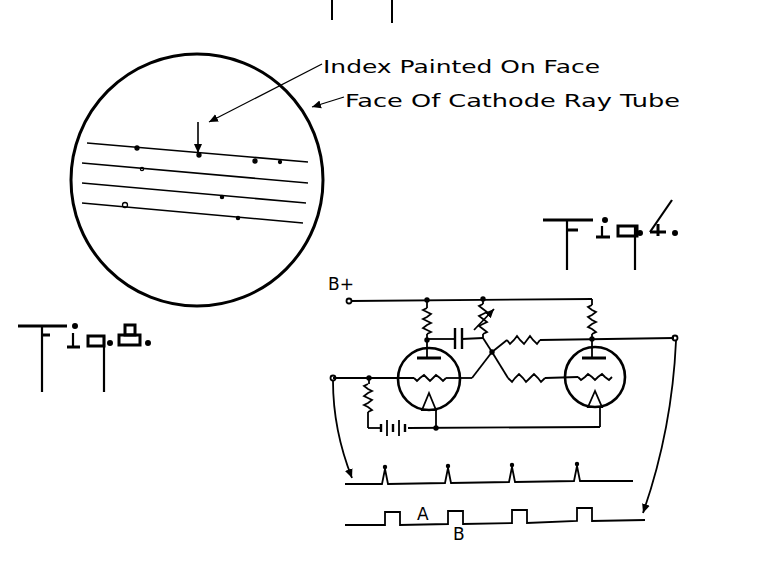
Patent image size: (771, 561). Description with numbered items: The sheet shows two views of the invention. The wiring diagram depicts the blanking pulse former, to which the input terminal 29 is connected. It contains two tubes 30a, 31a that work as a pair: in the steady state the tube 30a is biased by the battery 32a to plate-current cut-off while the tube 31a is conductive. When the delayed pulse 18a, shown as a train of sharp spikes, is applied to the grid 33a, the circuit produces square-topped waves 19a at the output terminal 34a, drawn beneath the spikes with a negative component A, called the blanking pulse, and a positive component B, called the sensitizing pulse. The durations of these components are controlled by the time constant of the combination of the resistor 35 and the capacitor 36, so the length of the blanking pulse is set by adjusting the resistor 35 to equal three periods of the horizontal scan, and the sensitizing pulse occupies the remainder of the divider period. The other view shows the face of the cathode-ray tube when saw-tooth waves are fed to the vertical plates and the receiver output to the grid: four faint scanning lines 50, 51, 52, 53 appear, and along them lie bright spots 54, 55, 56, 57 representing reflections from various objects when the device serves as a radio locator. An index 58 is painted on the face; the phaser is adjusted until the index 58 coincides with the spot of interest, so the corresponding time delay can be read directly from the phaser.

In FIG. 8, the scanning line 50 is at (308, 162).
In FIG. 8, the scanning line 51 is at (308, 183).
In FIG. 8, the scanning line 52 is at (306, 203).
In FIG. 8, the scanning line 53 is at (303, 223).
In FIG. 8, the bright spot 54 is at (137, 148).
In FIG. 8, the bright spot 55 is at (203, 153).
In FIG. 8, the bright spot 56 is at (256, 160).
In FIG. 8, the bright spot 57 is at (126, 208).
In FIG. 8, the index 58 is at (198, 125).
In FIG. 4, the terminal 29 is at (333, 375).
In FIG. 4, the tube 30a is at (458, 396).
In FIG. 4, the tube 31a is at (566, 385).
In FIG. 4, the battery 32a is at (390, 440).
In FIG. 4, the grid 33a is at (404, 362).
In FIG. 4, the output terminal 34a is at (677, 336).
In FIG. 4, the resistor 35 is at (496, 321).
In FIG. 4, the capacitor 36 is at (464, 316).
In FIG. 4, the delayed pulse 18a is at (512, 470).
In FIG. 4, the square-topped waves 19a is at (629, 523).